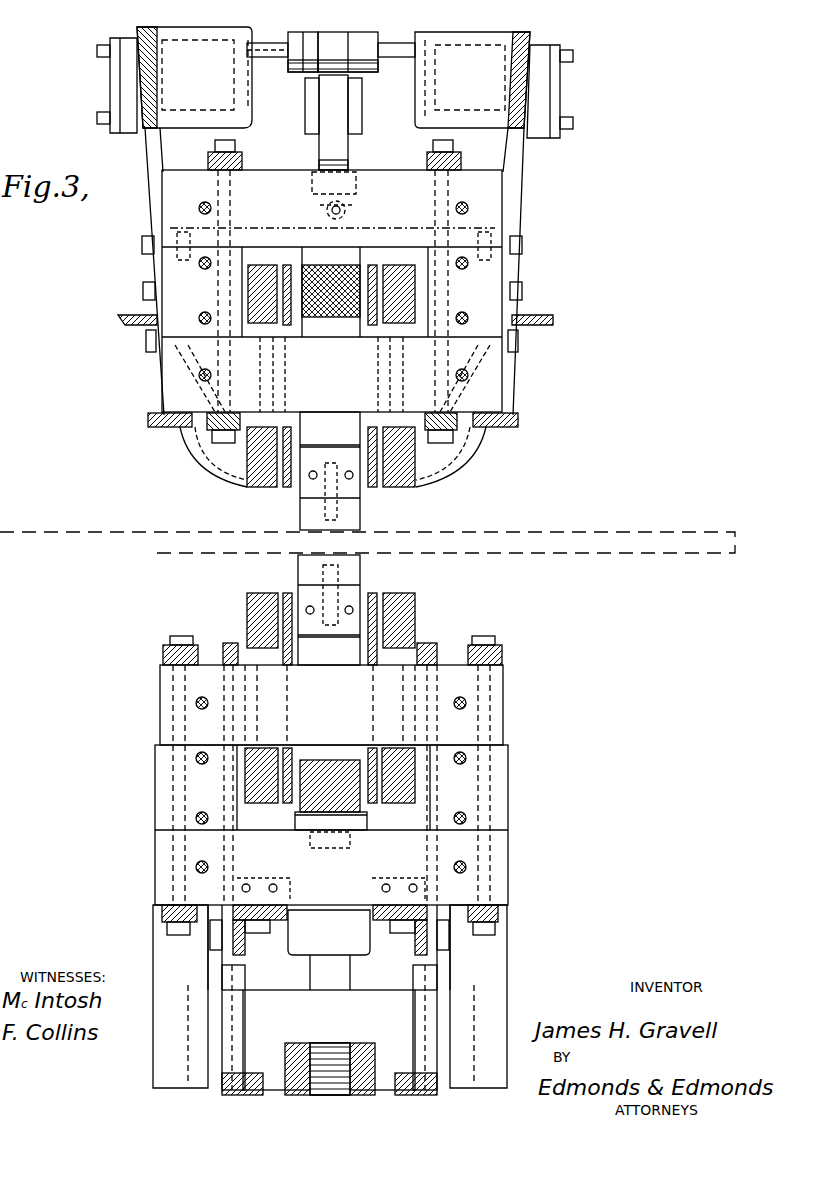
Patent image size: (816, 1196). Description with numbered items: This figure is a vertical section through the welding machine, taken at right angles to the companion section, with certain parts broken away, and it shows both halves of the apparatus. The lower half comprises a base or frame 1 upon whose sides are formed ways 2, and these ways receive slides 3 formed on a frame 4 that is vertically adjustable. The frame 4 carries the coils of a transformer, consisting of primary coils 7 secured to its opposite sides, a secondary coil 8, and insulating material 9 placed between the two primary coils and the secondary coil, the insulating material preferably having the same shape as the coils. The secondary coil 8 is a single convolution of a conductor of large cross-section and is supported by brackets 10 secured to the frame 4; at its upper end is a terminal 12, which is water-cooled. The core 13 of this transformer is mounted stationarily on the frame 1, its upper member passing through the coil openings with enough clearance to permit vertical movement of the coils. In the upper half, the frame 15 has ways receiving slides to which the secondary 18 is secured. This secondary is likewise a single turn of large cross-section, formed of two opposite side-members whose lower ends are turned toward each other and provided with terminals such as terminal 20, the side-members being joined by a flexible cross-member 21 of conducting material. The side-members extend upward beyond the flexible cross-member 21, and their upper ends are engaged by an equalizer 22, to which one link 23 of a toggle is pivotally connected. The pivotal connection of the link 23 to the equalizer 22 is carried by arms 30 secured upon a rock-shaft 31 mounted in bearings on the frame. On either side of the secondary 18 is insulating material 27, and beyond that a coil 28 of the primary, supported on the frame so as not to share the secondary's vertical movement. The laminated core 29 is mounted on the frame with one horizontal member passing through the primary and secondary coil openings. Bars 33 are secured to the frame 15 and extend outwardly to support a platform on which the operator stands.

The base or frame 1 is at (165, 950).
The ways 2 is at (352, 976).
The slides 3 is at (329, 947).
The frame 4 is at (420, 1028).
The primary coils 7 is at (248, 600).
The secondary coil 8 is at (362, 586).
The insulating material 9 is at (287, 593).
The brackets 10 is at (367, 822).
The terminal 12 is at (357, 571).
The core 13 is at (331, 785).
The frame 15 is at (150, 150).
The secondary 18 is at (352, 492).
The terminal 20 is at (360, 518).
The flexible cross-member 21 is at (325, 312).
The equalizer 22 is at (350, 104).
The link 23 is at (302, 38).
The insulating material 27 is at (289, 265).
The coil 28 is at (250, 286).
The core 29 is at (333, 412).
The arms 30 is at (352, 40).
The rock-shaft 31 is at (396, 50).
The bars 33 is at (125, 320).